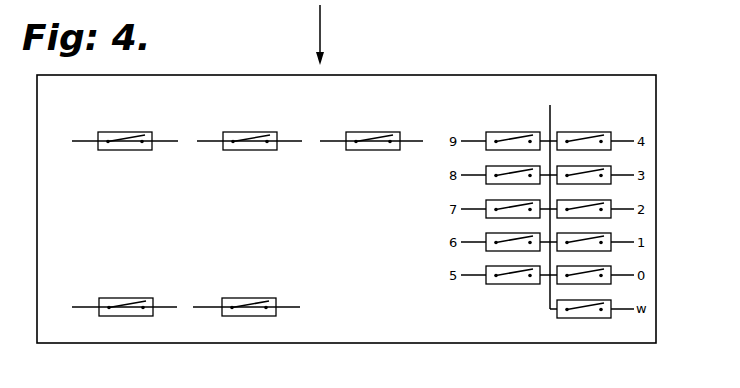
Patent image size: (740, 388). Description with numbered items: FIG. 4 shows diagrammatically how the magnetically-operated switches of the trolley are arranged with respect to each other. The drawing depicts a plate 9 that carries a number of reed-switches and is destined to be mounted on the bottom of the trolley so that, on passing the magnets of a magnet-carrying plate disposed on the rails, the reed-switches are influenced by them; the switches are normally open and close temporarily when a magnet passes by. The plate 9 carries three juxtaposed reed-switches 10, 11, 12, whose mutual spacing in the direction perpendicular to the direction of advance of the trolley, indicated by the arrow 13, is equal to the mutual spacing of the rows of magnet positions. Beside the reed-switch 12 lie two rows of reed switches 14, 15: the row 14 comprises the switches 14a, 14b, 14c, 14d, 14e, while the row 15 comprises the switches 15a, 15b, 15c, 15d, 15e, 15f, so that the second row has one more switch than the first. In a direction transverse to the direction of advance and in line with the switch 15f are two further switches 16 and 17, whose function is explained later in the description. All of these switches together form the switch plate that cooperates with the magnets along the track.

The plate 9 is at (648, 81).
The reed-switch 10 is at (121, 132).
The reed-switch 11 is at (246, 132).
The reed-switch 12 is at (370, 132).
The arrow 13 is at (322, 25).
The row of reed switches 14 is at (511, 103).
The switch 14a is at (497, 133).
The switch 14b is at (492, 170).
The switch 14c is at (484, 202).
The switch 14d is at (484, 235).
The switch 14e is at (486, 281).
The row of reed switches 15 is at (583, 103).
The switch 15a is at (596, 133).
The switch 15b is at (611, 184).
The switch 15c is at (611, 218).
The switch 15d is at (611, 252).
The switch 15e is at (611, 285).
The switch 15f is at (592, 318).
The switch 16 is at (122, 298).
The switch 17 is at (246, 298).